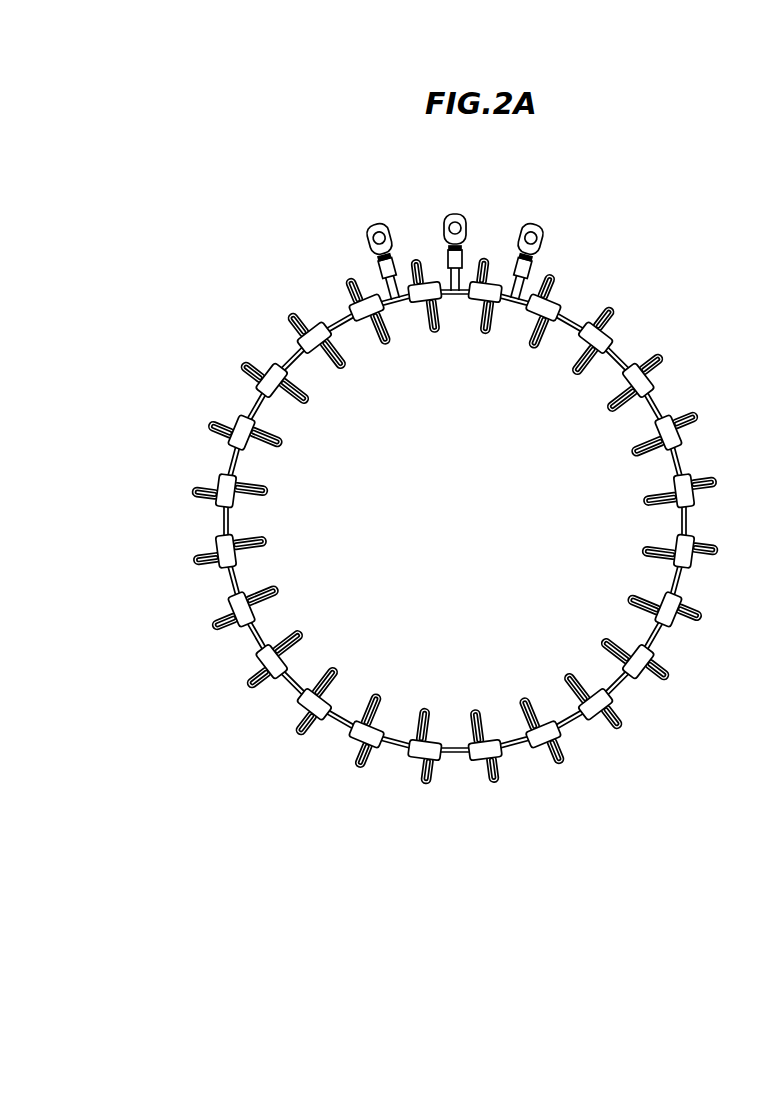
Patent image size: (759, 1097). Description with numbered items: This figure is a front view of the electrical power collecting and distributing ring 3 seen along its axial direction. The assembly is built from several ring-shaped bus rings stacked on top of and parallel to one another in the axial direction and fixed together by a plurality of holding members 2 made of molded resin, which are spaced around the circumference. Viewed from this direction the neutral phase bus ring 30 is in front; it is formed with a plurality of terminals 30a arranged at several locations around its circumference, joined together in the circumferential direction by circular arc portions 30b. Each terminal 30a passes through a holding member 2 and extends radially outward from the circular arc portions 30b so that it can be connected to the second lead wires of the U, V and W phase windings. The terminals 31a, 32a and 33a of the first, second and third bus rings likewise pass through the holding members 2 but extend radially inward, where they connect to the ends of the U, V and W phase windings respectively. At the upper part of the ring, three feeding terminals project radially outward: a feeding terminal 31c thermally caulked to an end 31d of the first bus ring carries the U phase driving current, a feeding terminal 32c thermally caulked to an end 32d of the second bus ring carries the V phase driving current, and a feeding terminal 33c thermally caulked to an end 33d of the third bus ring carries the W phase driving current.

The holding member 2 is at (557, 309).
The electrical power collecting and distributing ring 3 is at (699, 263).
The neutral phase bus ring 30 is at (338, 323).
The terminals 30a is at (362, 745).
The circular arc portions 30b is at (255, 632).
The terminals 31a is at (487, 330).
The feeding terminal 31c is at (373, 222).
The end 31d is at (395, 261).
The terminals 32a is at (530, 348).
The feeding terminal 32c is at (461, 213).
The end 32d is at (462, 266).
The terminals 33a is at (583, 375).
The feeding terminal 33c is at (536, 223).
The end 33d is at (528, 280).